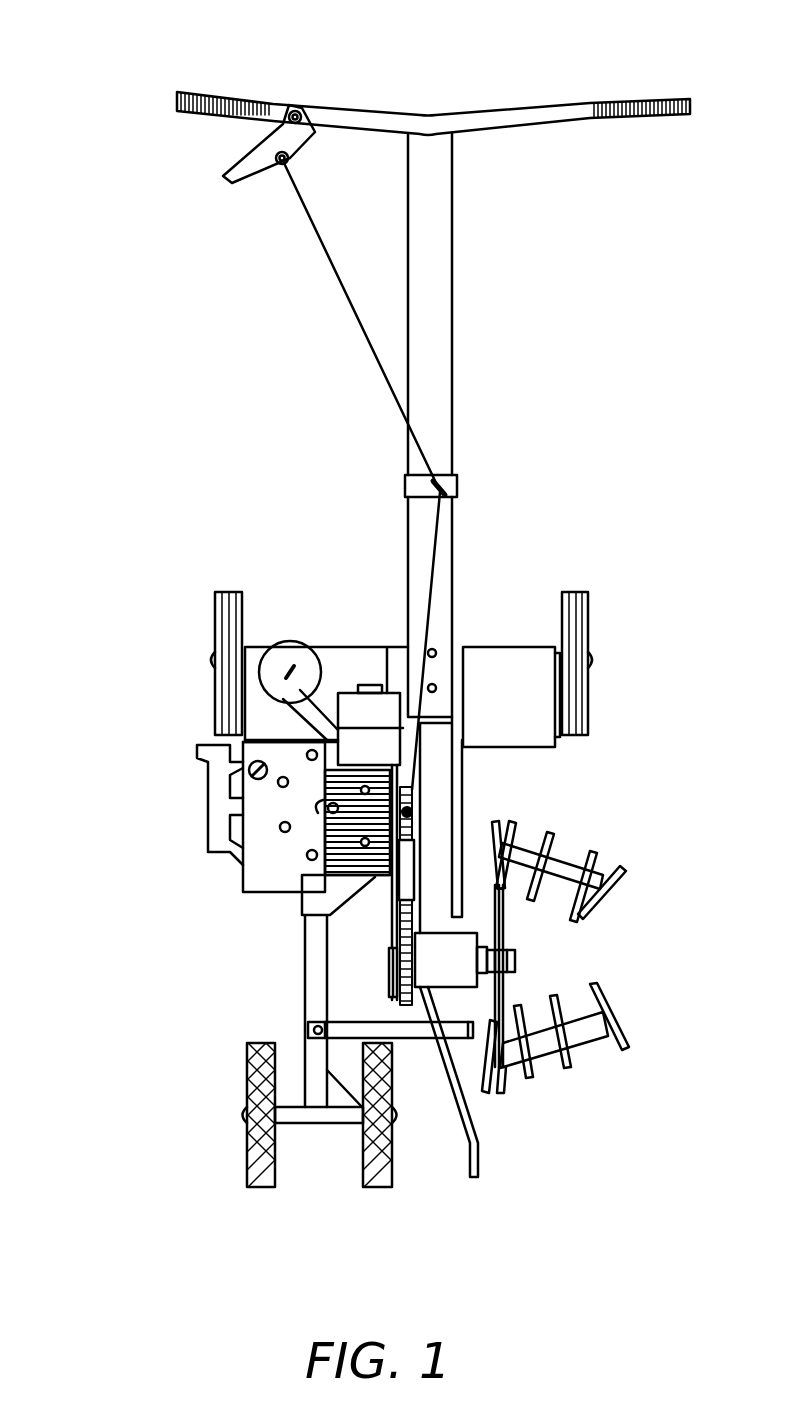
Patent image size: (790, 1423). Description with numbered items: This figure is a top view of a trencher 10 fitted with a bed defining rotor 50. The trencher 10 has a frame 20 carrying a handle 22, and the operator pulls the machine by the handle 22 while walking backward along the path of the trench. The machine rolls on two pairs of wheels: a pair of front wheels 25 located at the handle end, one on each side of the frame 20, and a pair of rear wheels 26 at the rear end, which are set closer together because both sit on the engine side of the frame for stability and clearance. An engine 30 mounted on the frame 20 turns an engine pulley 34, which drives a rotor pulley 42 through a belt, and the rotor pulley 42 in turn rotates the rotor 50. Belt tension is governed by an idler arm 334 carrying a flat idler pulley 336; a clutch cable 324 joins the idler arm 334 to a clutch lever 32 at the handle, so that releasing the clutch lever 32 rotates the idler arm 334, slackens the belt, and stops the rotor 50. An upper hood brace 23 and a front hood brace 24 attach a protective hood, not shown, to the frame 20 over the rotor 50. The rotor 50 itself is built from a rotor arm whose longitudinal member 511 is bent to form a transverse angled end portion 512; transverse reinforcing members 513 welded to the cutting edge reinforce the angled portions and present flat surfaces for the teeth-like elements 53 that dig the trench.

The trencher 10 is at (150, 80).
The handle 22 is at (440, 189).
The clutch lever 32 is at (262, 150).
The clutch cable 324 is at (306, 220).
The front wheels 25 is at (230, 592).
The frame 20 is at (305, 965).
The engine 30 is at (196, 806).
The engine pulley 34 is at (406, 792).
The idler arm 334 is at (393, 993).
The flat idler pulley 336 is at (411, 843).
The rotor pulley 42 is at (390, 975).
The upper hood brace 23 is at (416, 1038).
The front hood brace 24 is at (478, 1165).
The rear wheels 26 is at (365, 1186).
The rotor 50 is at (640, 846).
The longitudinal member 511 is at (500, 991).
The transverse angled end portion 512 is at (547, 1050).
The transverse reinforcing members 513 is at (552, 866).
The teeth-like elements 53 is at (530, 1085).